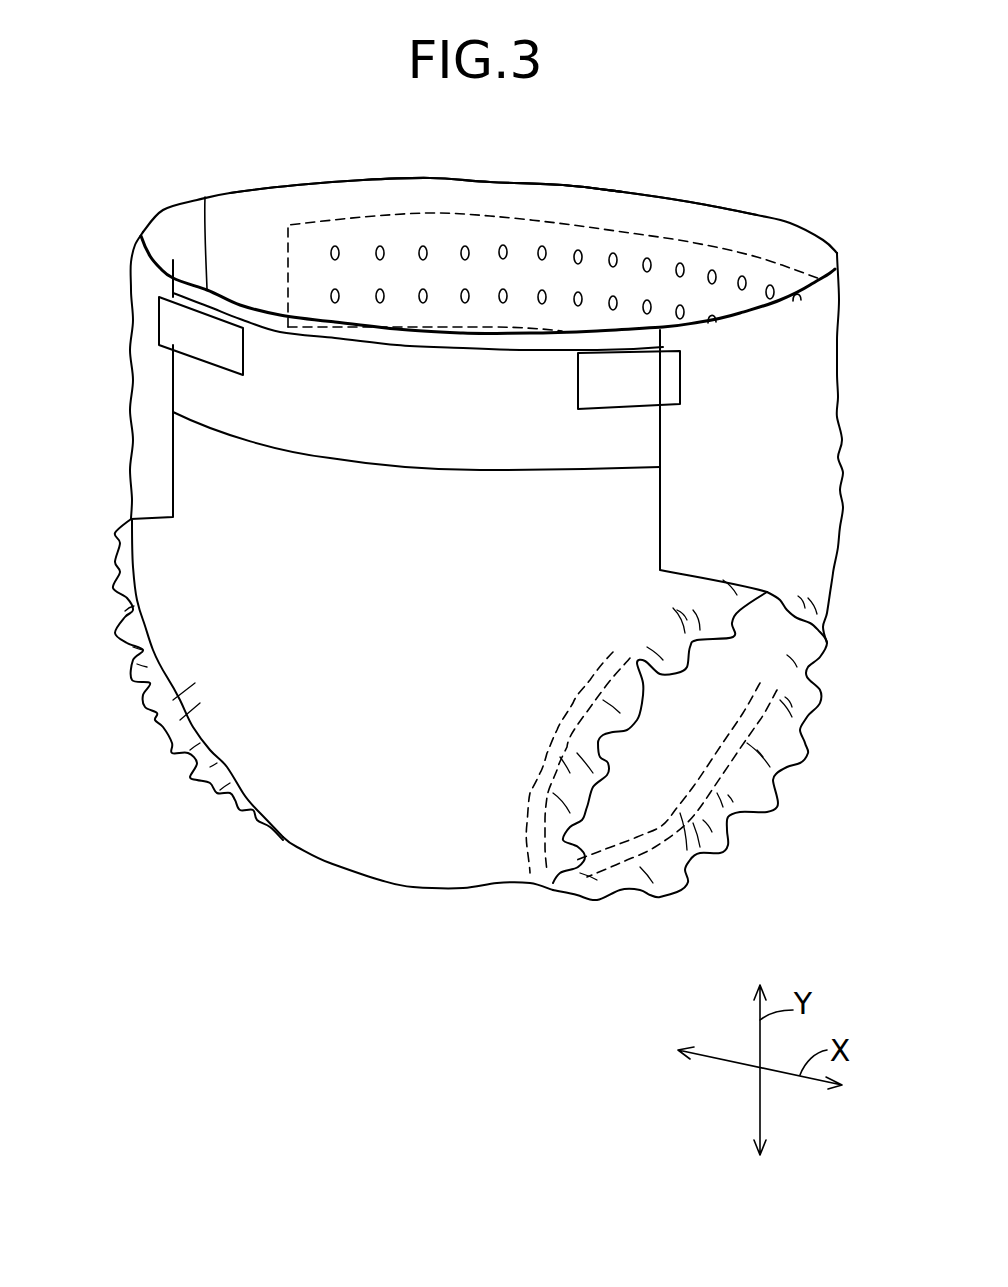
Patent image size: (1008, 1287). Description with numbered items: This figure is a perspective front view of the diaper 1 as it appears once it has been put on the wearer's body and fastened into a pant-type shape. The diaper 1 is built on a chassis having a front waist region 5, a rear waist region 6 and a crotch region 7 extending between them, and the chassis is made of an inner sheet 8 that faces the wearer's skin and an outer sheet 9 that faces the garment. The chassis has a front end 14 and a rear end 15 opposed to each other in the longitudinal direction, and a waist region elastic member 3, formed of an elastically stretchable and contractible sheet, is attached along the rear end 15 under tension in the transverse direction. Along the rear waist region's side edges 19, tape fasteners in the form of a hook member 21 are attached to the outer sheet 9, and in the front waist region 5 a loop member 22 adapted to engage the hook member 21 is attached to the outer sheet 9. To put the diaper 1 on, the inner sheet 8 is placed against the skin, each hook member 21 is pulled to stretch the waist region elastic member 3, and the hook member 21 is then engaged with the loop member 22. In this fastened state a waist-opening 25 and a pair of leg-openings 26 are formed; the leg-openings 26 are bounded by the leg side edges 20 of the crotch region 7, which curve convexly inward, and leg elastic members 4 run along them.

The diaper 1 is at (743, 149).
The waist region elastic member 3 is at (758, 248).
The leg elastic members 4 is at (553, 780).
The front waist region 5 is at (333, 571).
The rear waist region 6 is at (600, 233).
The crotch region 7 is at (392, 862).
The inner sheet 8 is at (435, 197).
The outer sheet 9 is at (330, 771).
The front end 14 is at (434, 328).
The rear end 15 is at (565, 185).
The rear waist region's side edges 19 is at (174, 474).
The leg side edges 20 is at (143, 694).
The hook member 21 is at (203, 348).
The loop member 22 is at (442, 440).
The waist-opening 25 is at (267, 245).
The leg-openings 26 is at (160, 723).